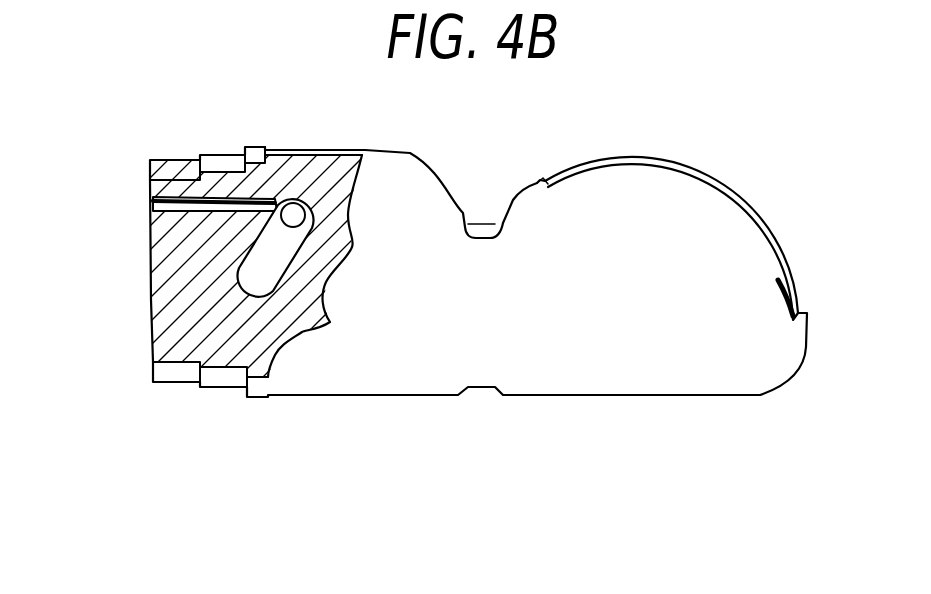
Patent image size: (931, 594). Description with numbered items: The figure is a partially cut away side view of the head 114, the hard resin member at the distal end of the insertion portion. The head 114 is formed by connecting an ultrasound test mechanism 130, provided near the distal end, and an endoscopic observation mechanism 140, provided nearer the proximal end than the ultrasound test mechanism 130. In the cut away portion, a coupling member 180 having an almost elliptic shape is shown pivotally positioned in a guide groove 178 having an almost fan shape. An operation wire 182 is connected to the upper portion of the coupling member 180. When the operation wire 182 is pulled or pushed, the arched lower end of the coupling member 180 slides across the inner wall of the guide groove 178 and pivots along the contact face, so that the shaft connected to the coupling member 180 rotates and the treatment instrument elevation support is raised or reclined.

The head 114 is at (660, 512).
The ultrasound test mechanism 130 is at (628, 410).
The endoscopic observation mechanism 140 is at (365, 410).
The guide groove 178 is at (255, 177).
The coupling member 180 is at (237, 247).
The operation wire 182 is at (170, 187).